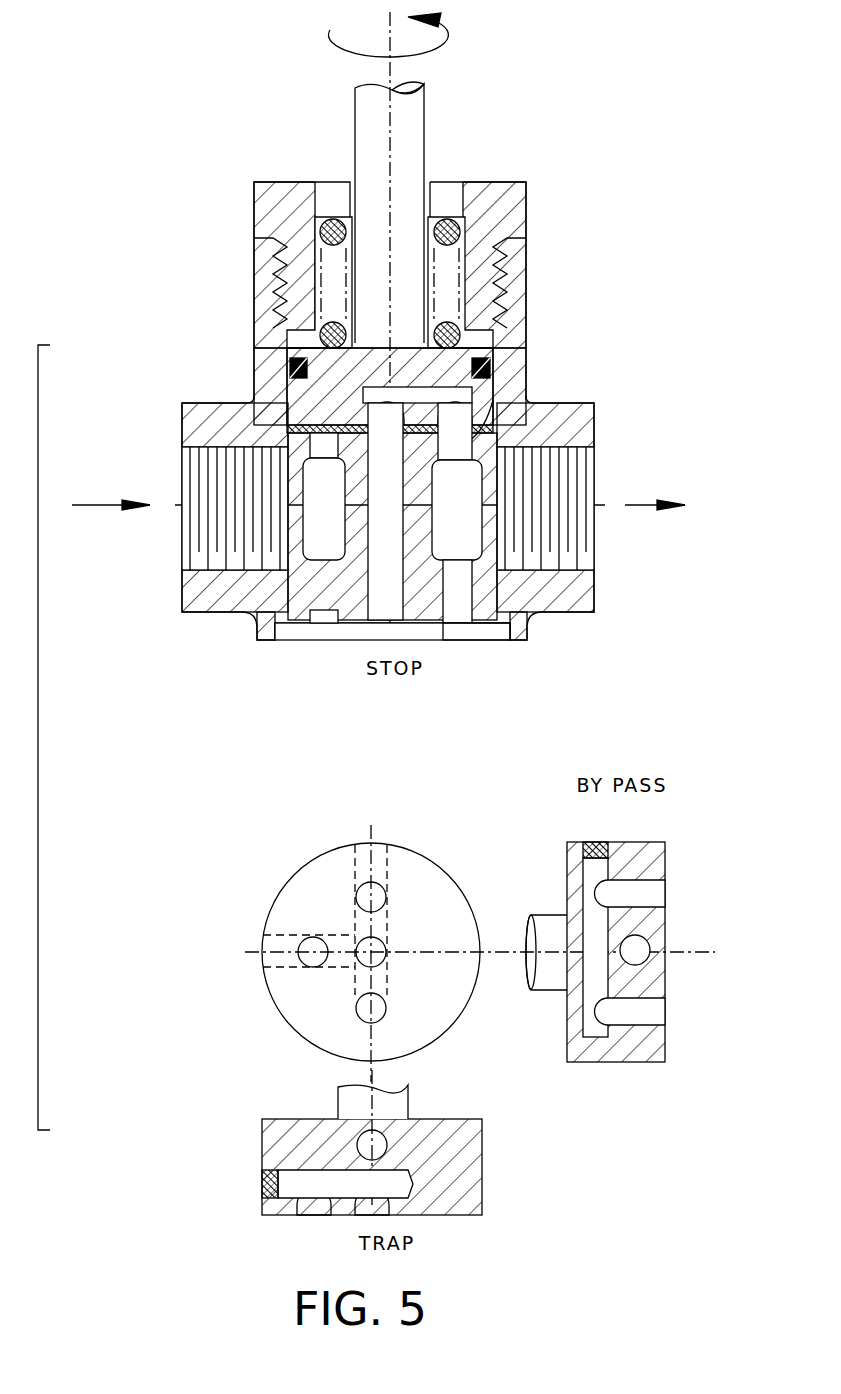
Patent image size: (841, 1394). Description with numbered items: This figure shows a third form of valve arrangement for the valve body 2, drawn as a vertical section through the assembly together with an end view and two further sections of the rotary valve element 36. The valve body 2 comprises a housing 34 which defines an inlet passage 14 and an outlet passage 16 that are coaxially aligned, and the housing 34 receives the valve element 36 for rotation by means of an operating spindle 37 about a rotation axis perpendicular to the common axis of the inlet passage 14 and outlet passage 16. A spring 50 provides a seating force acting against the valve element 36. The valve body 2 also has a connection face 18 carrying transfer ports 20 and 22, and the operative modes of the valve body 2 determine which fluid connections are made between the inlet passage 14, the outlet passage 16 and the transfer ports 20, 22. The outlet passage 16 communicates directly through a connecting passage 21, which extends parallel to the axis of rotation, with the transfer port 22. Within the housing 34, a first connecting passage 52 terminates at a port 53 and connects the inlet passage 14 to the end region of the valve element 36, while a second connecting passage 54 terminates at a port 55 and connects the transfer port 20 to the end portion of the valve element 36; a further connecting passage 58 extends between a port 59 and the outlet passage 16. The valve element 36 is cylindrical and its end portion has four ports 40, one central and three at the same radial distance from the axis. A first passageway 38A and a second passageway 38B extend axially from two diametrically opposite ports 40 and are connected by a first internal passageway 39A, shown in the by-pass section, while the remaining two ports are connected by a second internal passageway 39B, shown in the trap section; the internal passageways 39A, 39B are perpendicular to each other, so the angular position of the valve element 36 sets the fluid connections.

The valve body 2 is at (550, 178).
The inlet passage 14 is at (182, 556).
The outlet passage 16 is at (600, 513).
The connection face 18 is at (258, 637).
The transfer port 20 is at (378, 633).
The connecting passage 21 is at (458, 580).
The transfer port 22 is at (455, 633).
The housing 34 is at (580, 432).
The valve element 36 is at (526, 322).
The operating spindle 37 is at (405, 347).
The spring 50 is at (425, 248).
The first connecting passage 52 is at (255, 395).
The port 53 is at (325, 462).
The second connecting passage 54 is at (327, 628).
The port 55 is at (368, 516).
The connecting passage 58 is at (528, 398).
The port 59 is at (462, 463).
The first passageway 38A is at (660, 1030).
The second passageway 38B is at (660, 886).
The first internal passageway 39A is at (588, 998).
The second internal passageway 39B is at (262, 1186).
The ports 40 is at (650, 1012).